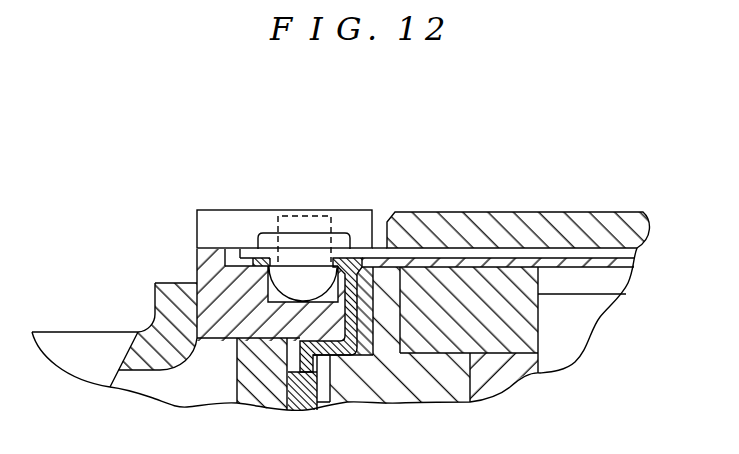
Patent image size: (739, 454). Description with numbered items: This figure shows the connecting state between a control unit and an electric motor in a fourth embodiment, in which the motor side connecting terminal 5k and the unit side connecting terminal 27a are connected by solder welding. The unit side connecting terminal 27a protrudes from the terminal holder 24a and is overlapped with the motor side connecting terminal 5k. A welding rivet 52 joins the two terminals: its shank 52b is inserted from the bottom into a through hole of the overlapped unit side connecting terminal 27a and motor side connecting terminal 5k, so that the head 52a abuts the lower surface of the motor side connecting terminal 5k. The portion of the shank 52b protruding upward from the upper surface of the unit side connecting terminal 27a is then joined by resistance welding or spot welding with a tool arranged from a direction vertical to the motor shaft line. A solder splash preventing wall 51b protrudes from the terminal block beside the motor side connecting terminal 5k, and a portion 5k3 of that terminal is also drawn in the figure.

The solder splash preventing wall 51b is at (216, 230).
The welding rivet 52 is at (266, 230).
The shank 52b is at (291, 214).
The seal plate portion 5k3 is at (336, 264).
The motor side connecting terminal 5k is at (366, 262).
The terminal holder 24a is at (497, 228).
The unit side connecting terminal 27a is at (560, 262).
The head 52a is at (293, 279).